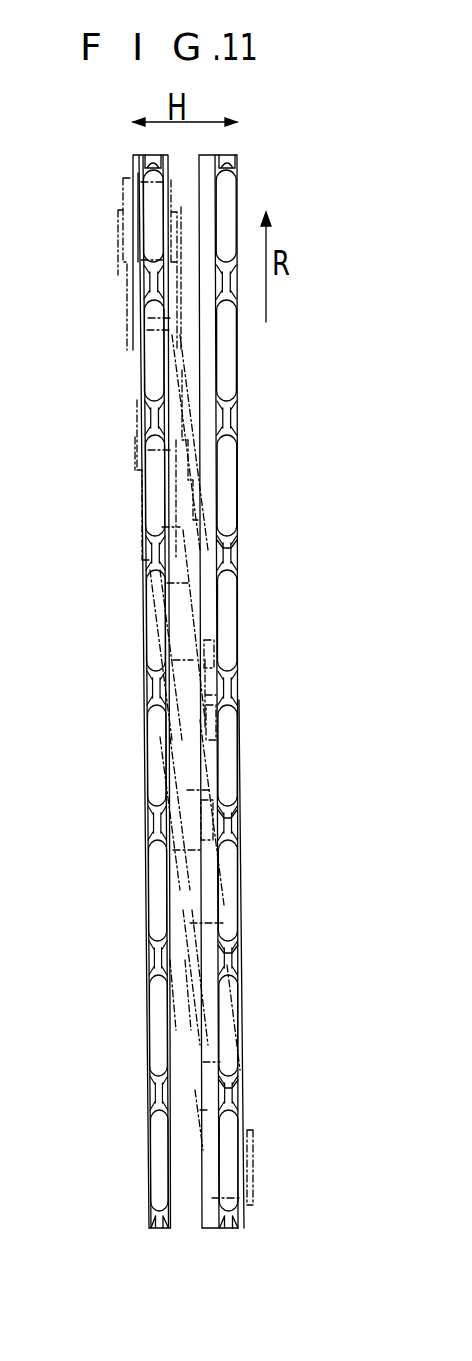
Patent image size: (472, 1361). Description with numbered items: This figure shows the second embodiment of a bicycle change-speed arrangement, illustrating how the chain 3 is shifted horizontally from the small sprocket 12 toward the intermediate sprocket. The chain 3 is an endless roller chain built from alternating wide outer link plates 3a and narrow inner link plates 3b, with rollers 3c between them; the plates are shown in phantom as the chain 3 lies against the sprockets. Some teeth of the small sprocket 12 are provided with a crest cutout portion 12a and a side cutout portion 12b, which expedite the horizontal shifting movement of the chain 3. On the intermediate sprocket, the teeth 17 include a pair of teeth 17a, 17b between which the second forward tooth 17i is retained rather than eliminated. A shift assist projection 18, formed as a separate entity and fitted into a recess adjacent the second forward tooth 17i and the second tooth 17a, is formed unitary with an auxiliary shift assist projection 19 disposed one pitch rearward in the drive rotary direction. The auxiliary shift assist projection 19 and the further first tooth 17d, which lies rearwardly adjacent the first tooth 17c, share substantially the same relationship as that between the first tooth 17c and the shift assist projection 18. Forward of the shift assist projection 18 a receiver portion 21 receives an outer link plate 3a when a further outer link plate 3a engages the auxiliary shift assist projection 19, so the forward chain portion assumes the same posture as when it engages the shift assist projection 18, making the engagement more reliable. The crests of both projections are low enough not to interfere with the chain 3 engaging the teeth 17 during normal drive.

The chain 3 is at (262, 1124).
The outer link plate 3a is at (160, 826).
The inner link plate 3b is at (148, 687).
The roller 3c is at (165, 976).
The small sprocket 12 is at (146, 1018).
The crest cutout portion 12a is at (148, 414).
The side cutout portion 12b is at (140, 297).
The teeth 17 is at (235, 293).
The second tooth 17a is at (228, 828).
The tooth of the pair 17b is at (230, 552).
The first tooth 17c is at (238, 958).
The further first tooth 17d is at (238, 1083).
The second forward tooth 17i is at (233, 690).
The shift assist projection 18 is at (228, 722).
The auxiliary shift assist projection 19 is at (210, 817).
The receiver portion 21 is at (214, 658).